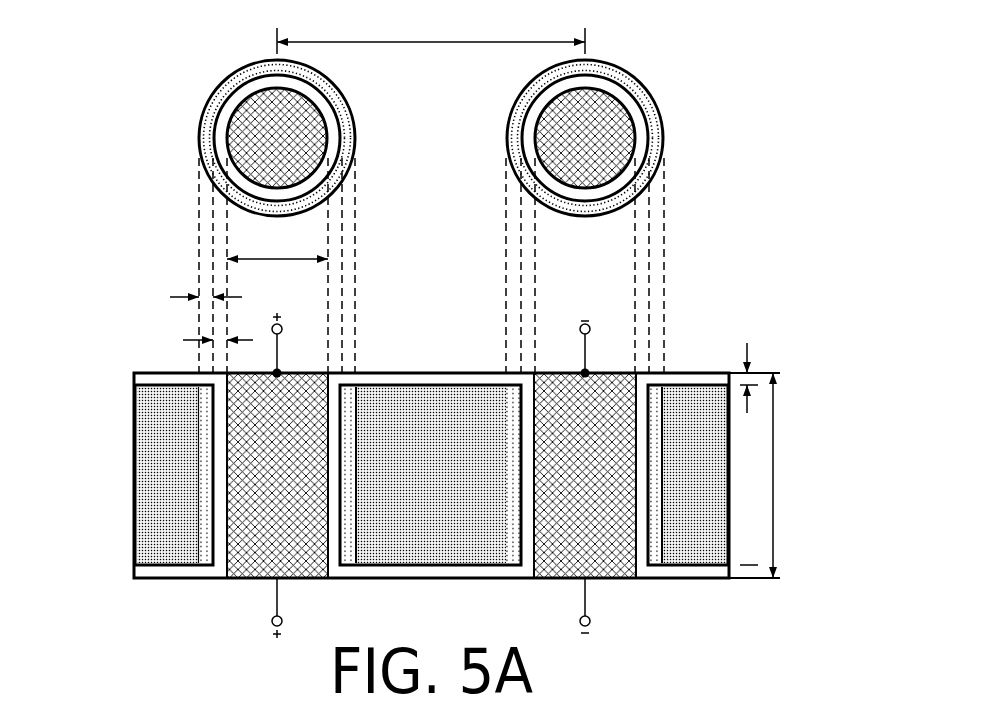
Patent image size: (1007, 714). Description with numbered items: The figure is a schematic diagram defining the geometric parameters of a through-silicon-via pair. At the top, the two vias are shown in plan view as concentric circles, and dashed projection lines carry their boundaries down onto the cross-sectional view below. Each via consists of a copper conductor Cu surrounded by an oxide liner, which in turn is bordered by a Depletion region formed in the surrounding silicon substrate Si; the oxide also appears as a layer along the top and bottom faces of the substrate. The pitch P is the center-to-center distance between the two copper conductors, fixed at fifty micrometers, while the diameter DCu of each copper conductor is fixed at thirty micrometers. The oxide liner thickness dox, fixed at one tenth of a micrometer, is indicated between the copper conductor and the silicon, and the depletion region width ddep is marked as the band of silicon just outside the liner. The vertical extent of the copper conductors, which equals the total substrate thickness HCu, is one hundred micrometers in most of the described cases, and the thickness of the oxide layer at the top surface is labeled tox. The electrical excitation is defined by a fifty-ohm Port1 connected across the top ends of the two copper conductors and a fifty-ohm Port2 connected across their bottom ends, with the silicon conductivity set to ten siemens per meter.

The pitch P is at (431, 35).
The diameter DCu is at (277, 246).
The depletion region width ddep is at (183, 293).
The oxide liner thickness dox is at (201, 336).
The port 1 (50 Ω) Port1 is at (431, 345).
The port 2 (50 Ω) Port2 is at (431, 608).
The element oxide is at (431, 477).
The copper via Cu is at (431, 475).
The silicon substrate Si is at (431, 475).
The top oxide thickness tox is at (754, 446).
The total substrate thickness HCu is at (793, 475).
The depletion region Depletion is at (200, 472).